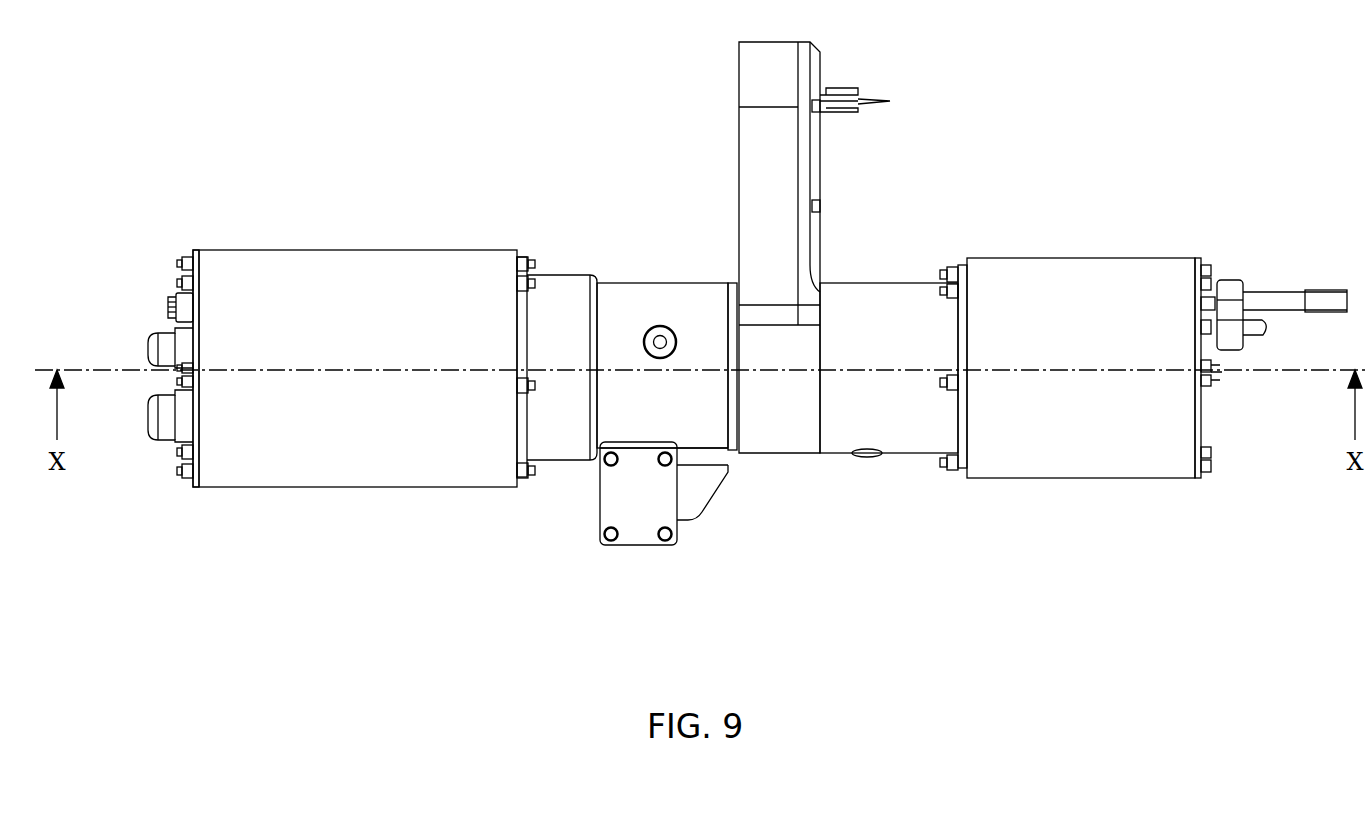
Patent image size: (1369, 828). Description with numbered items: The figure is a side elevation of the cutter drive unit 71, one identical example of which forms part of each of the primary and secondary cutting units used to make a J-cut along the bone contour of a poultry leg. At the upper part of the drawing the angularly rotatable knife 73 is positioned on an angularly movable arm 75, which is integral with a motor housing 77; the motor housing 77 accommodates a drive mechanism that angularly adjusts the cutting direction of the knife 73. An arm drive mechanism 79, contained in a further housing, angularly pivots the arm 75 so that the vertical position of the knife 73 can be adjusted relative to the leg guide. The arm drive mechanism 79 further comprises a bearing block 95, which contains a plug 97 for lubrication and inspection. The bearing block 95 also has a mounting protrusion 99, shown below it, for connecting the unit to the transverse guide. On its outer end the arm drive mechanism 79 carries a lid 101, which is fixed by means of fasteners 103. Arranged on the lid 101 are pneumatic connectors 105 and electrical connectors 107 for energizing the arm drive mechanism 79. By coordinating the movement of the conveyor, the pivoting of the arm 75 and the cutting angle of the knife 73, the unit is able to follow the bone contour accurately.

The cutter drive unit 71 is at (584, 118).
The angularly rotatable knife 73 is at (890, 90).
The angularly movable arm 75 is at (770, 174).
The motor housing 77 is at (1093, 290).
The arm drive mechanism 79 is at (352, 287).
The bearing block 95 is at (617, 305).
The plug 97 is at (660, 326).
The mounting protrusion 99 is at (640, 508).
The lid 101 is at (196, 462).
The fasteners 103 is at (183, 261).
The pneumatic connectors 105 is at (180, 298).
The electrical connectors 107 is at (163, 350).